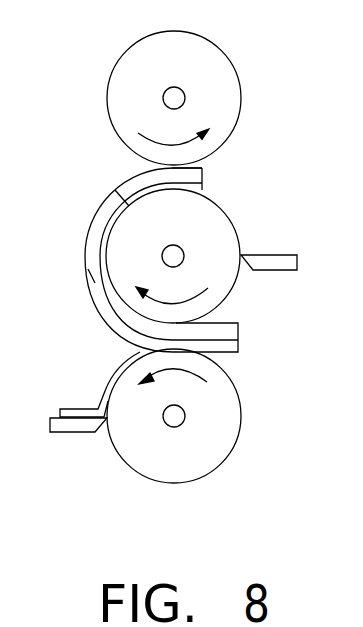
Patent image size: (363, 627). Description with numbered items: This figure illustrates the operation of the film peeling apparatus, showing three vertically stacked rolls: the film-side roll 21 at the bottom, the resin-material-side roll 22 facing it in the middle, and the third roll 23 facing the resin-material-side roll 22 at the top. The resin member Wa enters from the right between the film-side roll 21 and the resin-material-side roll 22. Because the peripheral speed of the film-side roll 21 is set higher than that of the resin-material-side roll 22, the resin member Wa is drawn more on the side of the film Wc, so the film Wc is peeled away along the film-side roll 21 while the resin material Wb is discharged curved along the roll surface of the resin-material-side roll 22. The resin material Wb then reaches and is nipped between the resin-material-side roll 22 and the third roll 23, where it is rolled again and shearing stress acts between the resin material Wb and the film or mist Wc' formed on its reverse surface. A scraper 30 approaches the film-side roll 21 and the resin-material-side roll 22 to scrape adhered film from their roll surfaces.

The film-side roll 21 is at (201, 463).
The resin-material-side roll 22 is at (210, 218).
The third roll 23 is at (155, 48).
The scraper 30 is at (262, 253).
The resin member Wa is at (275, 316).
The resin material Wb is at (86, 277).
The film Wc is at (96, 384).
The film or mist Wc' is at (123, 187).